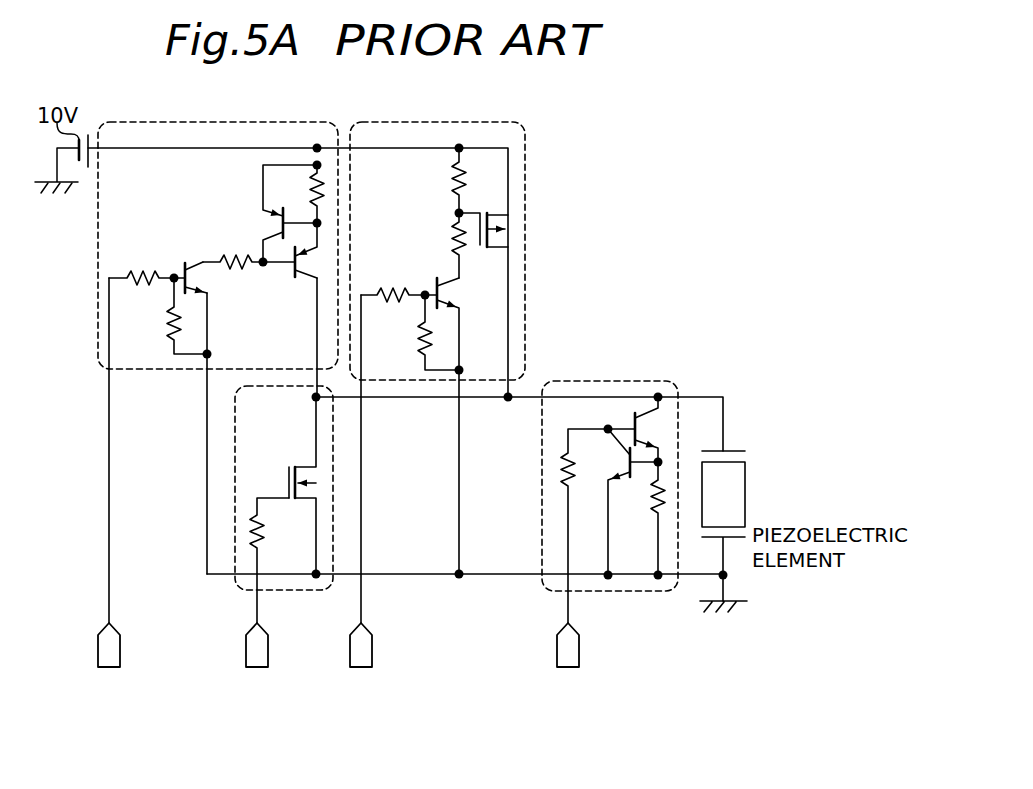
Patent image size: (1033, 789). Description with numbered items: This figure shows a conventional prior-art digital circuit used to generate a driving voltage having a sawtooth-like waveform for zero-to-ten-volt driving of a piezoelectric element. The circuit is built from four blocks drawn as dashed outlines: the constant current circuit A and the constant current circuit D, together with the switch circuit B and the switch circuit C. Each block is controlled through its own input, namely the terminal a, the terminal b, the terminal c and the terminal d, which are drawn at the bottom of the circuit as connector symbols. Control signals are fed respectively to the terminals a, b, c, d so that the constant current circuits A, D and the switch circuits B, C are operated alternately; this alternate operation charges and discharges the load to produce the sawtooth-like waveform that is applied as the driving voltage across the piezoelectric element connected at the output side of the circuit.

The constant current circuit A is at (208, 120).
The switch circuit B is at (235, 590).
The switch circuit C is at (412, 120).
The constant current circuit D is at (580, 381).
The terminal a is at (109, 486).
The terminal b is at (257, 658).
The terminal c is at (361, 494).
The terminal d is at (568, 658).